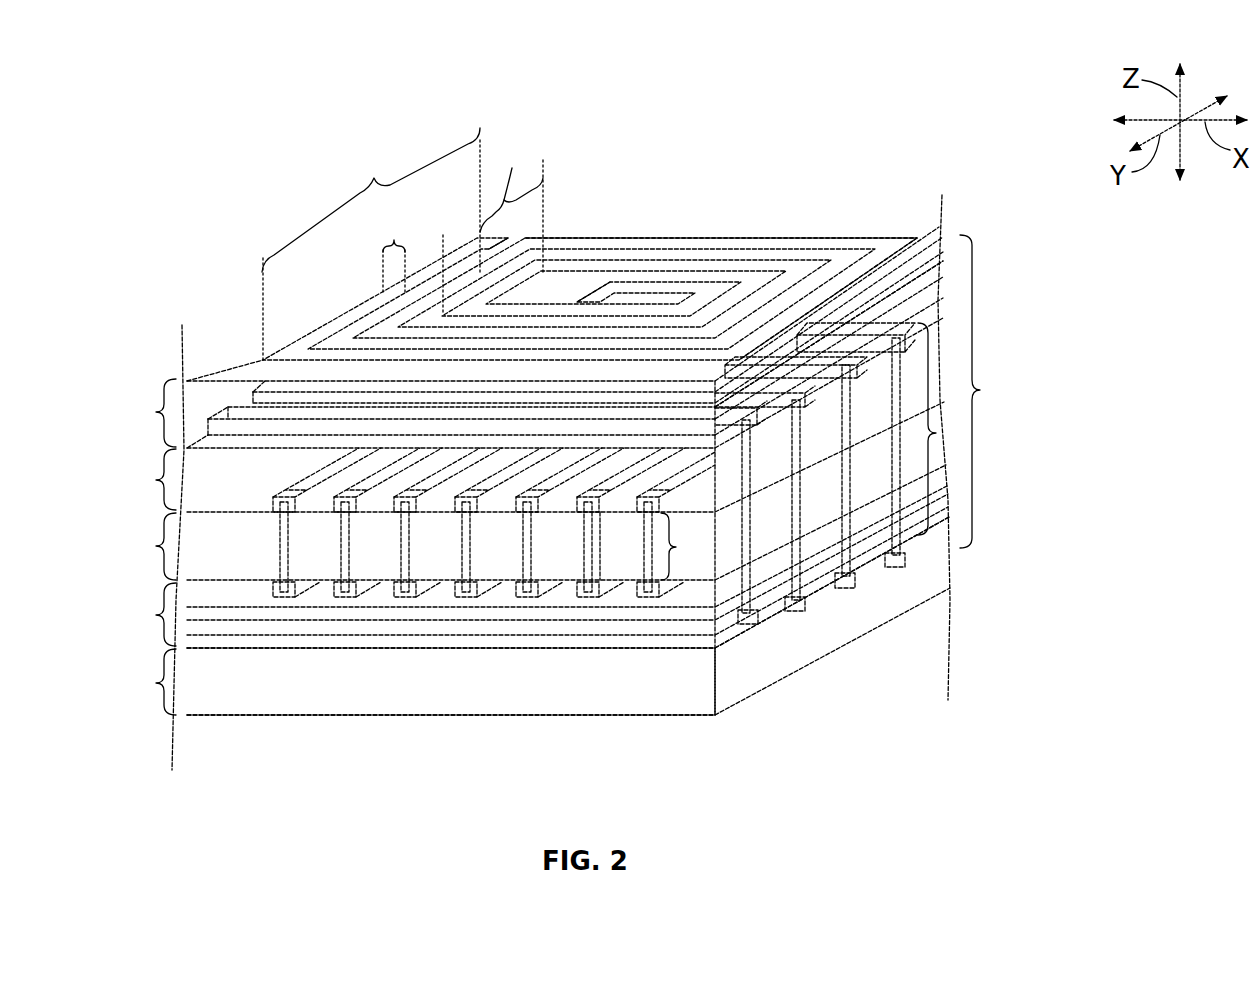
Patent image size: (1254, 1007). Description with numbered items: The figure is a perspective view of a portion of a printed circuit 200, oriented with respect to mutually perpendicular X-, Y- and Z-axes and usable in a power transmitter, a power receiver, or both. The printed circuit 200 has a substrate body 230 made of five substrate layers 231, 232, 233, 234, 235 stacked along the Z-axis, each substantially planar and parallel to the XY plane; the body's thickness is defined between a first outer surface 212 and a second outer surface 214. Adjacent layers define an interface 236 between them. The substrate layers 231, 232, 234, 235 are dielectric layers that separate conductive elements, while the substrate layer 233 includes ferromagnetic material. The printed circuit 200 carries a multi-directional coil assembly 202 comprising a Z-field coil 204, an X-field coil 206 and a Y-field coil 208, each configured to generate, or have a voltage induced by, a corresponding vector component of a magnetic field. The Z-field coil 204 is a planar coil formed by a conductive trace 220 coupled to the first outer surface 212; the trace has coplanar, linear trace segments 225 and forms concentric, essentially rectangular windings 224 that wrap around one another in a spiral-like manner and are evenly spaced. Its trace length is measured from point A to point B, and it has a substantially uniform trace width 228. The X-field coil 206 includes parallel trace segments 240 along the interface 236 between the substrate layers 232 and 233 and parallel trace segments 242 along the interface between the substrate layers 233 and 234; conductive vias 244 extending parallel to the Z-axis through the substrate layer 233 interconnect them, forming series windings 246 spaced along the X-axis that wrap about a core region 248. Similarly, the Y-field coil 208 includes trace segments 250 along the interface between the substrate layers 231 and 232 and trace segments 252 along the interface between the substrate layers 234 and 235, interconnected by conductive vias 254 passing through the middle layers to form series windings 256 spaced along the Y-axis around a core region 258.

The printed circuit 200 is at (960, 155).
The multi-directional coil assembly 202 is at (874, 471).
The Z-field coil 204 is at (677, 227).
The X-field coil 206 is at (320, 603).
The Y-field coil 208 is at (852, 582).
The first outer surface 212 is at (222, 366).
The second outer surface 214 is at (498, 720).
The conductive trace 220 is at (920, 237).
The windings 224 is at (805, 238).
The trace segments 225 is at (402, 244).
The trace width 228 is at (397, 247).
The substrate body 230 is at (672, 690).
The substrate layer 231 is at (143, 413).
The substrate layer 232 is at (141, 479).
The substrate layer 233 is at (409, 546).
The substrate layer 234 is at (407, 614).
The substrate layer 235 is at (407, 681).
The interface 236 is at (938, 327).
The trace segments 240 is at (293, 497).
The trace segments 242 is at (357, 600).
The conductive vias 244 is at (278, 547).
The windings 246 is at (627, 562).
The core region 248 is at (676, 547).
The trace segments 250 is at (870, 314).
The trace segments 252 is at (927, 530).
The conductive vias 254 is at (784, 518).
The windings 256 is at (832, 500).
The core region 258 is at (943, 433).
The point A is at (487, 242).
The point B is at (595, 297).